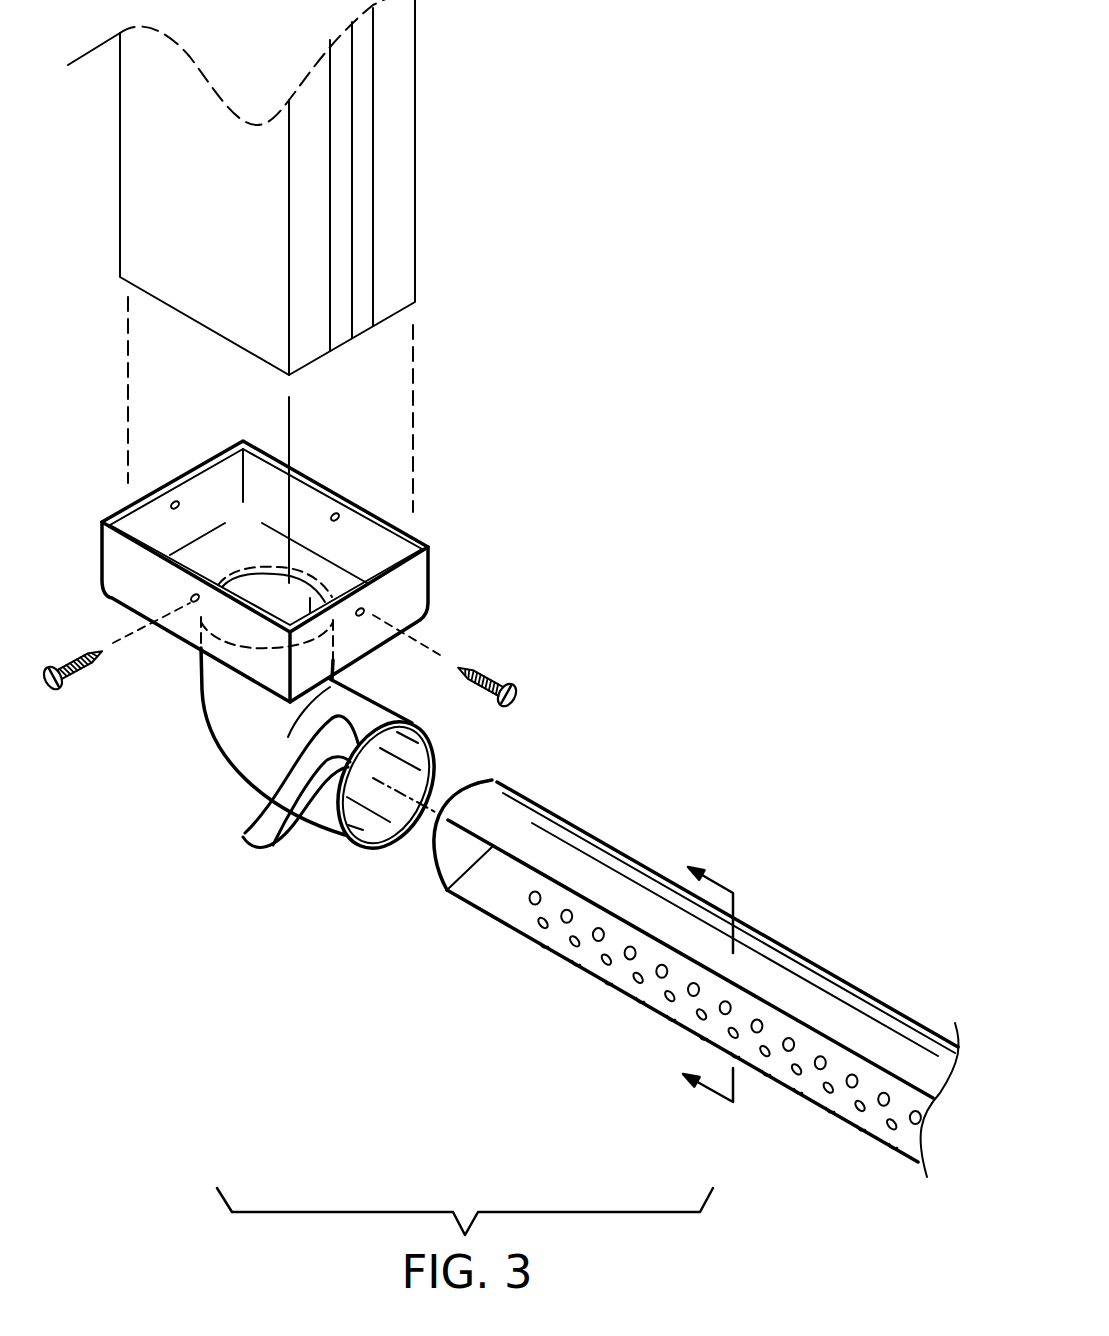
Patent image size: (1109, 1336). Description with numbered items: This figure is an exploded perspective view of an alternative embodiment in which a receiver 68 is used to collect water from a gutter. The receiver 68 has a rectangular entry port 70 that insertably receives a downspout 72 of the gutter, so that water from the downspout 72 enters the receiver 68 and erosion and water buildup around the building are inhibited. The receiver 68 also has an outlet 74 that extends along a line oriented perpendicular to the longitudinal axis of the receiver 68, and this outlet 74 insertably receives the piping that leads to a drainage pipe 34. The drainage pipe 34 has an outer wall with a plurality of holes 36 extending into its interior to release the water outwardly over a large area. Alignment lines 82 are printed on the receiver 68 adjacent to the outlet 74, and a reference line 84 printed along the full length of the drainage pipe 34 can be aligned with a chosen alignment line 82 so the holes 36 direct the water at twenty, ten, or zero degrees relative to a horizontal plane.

The drainage pipe 34 is at (633, 858).
The holes 36 is at (599, 929).
The receiver 68 is at (207, 718).
The rectangular entry port 70 is at (280, 538).
The downspout 72 is at (360, 333).
The outlet 74 is at (386, 828).
The alignment lines 82 is at (243, 835).
The reference line 84 is at (443, 892).